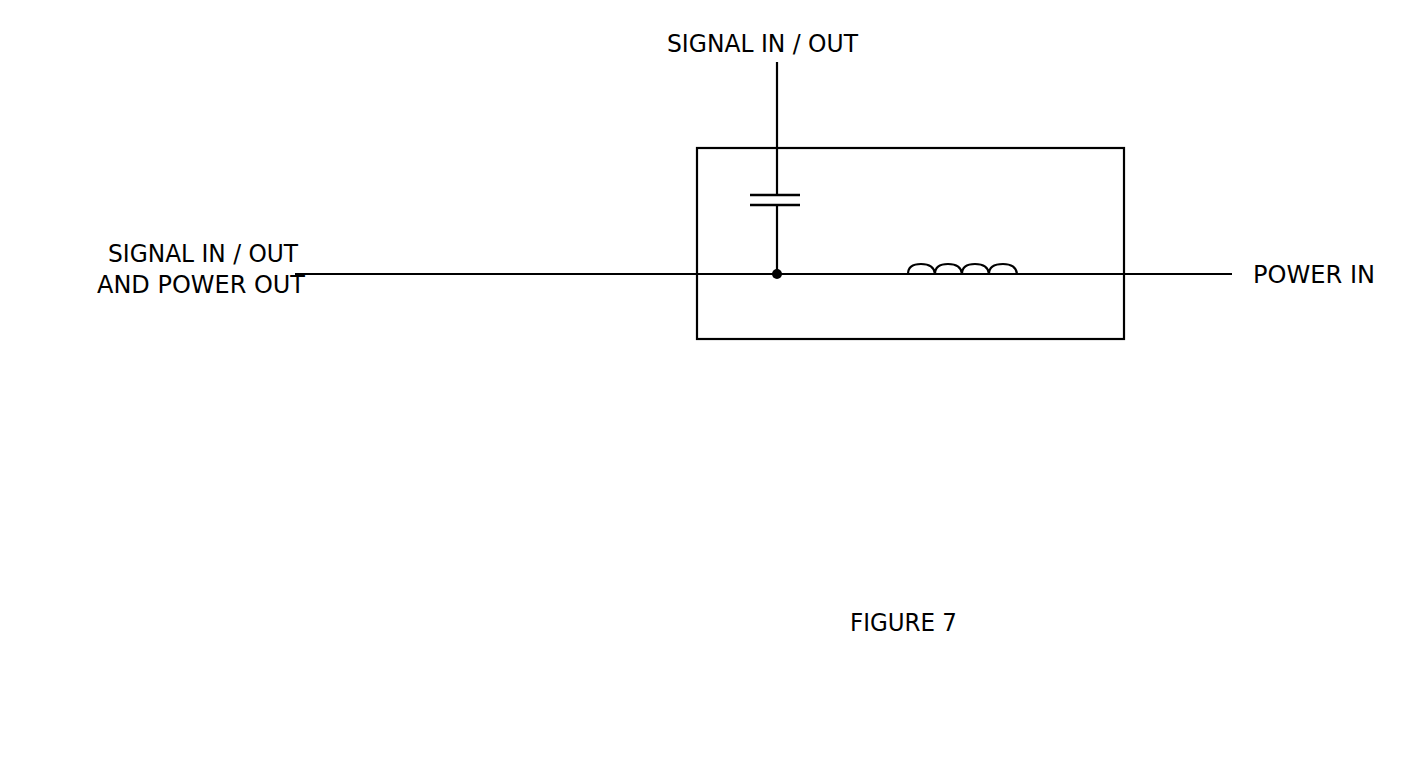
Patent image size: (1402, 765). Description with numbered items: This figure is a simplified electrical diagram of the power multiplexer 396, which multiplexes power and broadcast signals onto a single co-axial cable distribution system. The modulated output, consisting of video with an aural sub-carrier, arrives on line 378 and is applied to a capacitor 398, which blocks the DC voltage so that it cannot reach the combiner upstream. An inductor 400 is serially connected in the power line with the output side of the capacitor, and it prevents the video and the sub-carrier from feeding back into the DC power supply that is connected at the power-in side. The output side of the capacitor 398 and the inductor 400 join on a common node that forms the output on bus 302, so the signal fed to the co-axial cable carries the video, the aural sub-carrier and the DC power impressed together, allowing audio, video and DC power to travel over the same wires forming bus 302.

The bus 302 is at (503, 274).
The line 378 is at (777, 125).
The power multiplexer 396 is at (1124, 210).
The capacitor 398 is at (752, 213).
The inductor 400 is at (991, 274).